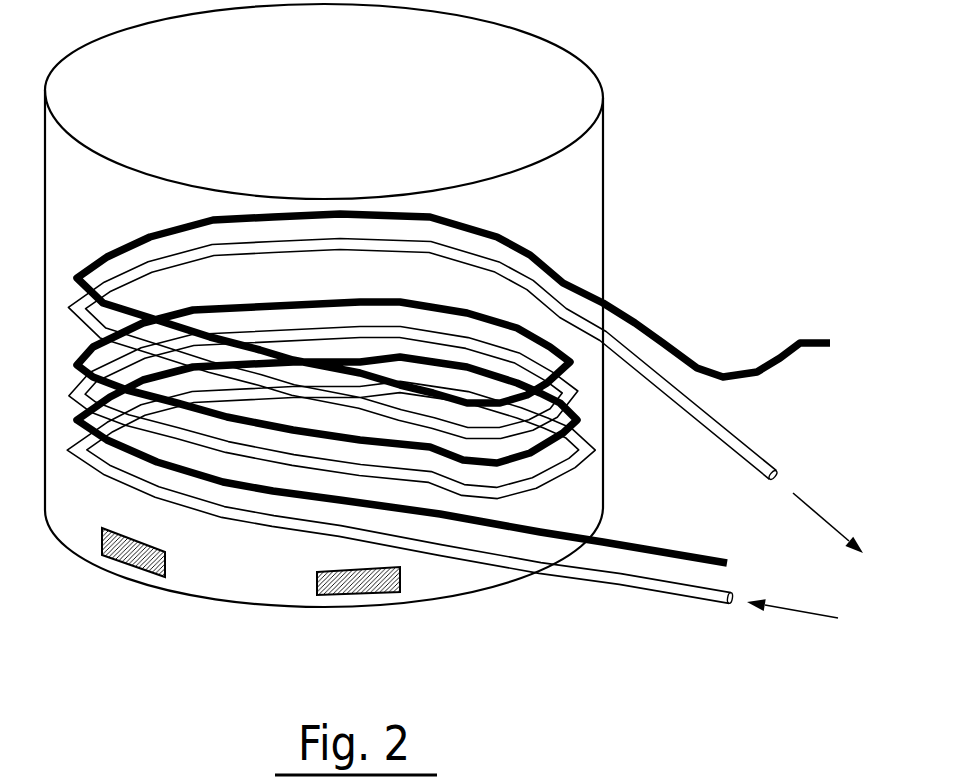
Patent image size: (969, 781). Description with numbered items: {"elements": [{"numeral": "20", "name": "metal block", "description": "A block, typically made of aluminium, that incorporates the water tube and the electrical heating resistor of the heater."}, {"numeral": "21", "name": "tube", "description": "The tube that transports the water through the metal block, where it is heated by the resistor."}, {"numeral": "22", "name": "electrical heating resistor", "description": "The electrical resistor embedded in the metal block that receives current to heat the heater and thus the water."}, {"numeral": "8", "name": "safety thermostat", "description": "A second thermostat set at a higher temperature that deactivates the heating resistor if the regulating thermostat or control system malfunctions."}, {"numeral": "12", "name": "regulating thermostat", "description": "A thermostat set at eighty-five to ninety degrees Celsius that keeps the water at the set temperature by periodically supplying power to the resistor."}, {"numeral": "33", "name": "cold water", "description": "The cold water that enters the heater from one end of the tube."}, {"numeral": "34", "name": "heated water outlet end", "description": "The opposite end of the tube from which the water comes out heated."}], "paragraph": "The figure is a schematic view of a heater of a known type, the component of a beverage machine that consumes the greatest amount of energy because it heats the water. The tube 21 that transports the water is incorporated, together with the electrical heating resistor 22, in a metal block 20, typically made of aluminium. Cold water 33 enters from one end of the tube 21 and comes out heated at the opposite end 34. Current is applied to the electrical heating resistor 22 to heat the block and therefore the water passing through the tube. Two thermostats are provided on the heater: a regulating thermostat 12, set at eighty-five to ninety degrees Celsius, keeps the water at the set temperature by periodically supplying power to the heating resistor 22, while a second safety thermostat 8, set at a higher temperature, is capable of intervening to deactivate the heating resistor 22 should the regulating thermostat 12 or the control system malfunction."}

The container / vessel 20 is at (562, 117).
The tube 21 is at (771, 462).
The electrical wire / heating cable 22 is at (830, 342).
The sensor 8 is at (128, 557).
The sensor 12 is at (362, 582).
The inlet flow direction arrow 33 is at (792, 622).
The outlet flow direction arrow 34 is at (828, 522).